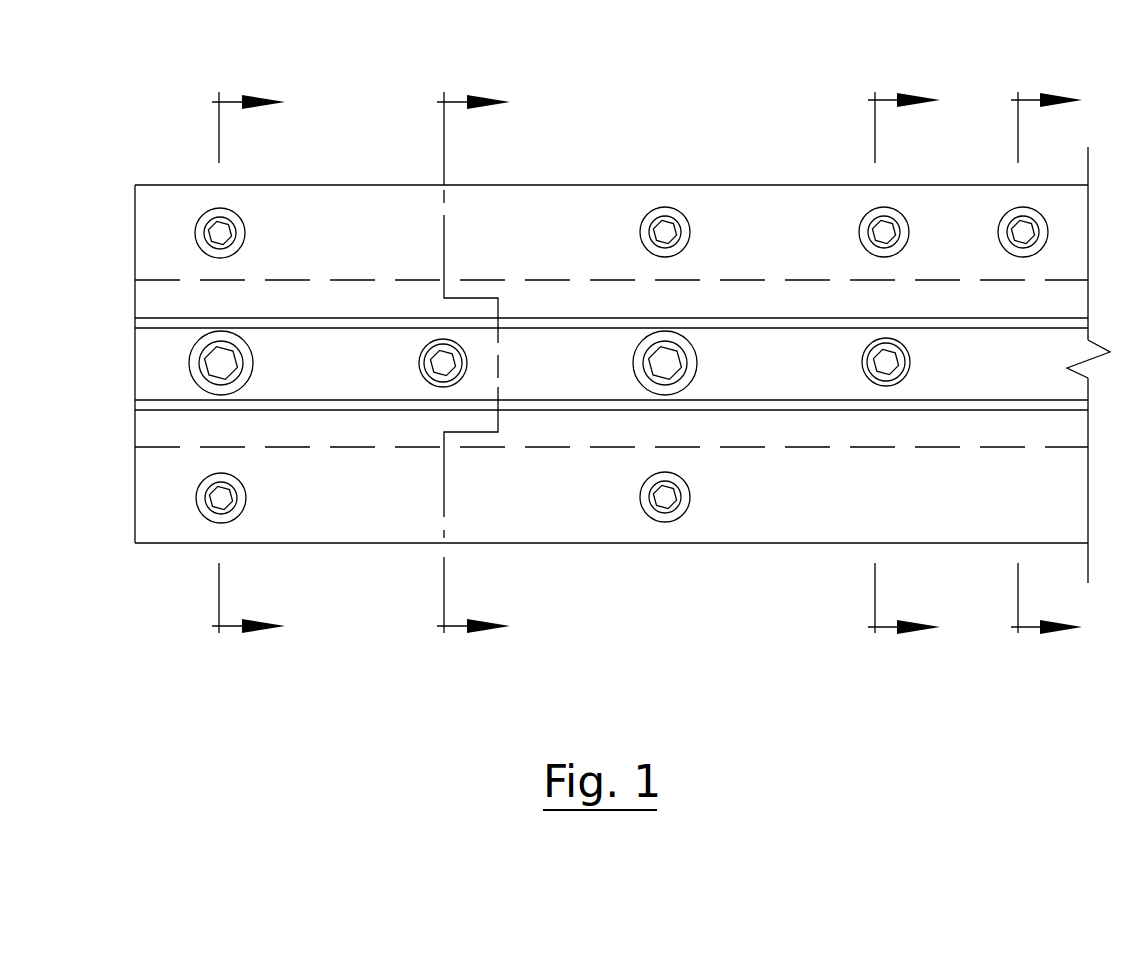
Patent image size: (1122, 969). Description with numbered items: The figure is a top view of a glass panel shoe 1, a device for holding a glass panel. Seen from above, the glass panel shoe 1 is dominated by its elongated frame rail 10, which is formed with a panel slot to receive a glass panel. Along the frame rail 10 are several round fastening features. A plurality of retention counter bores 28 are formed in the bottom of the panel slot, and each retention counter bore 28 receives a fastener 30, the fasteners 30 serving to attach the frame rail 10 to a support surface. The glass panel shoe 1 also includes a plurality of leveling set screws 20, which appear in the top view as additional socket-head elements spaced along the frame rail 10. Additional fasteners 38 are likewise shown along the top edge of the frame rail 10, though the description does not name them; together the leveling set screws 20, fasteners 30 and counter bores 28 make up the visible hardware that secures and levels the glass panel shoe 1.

The glass panel shoe 1 is at (722, 62).
The frame rail 10 is at (568, 185).
The leveling set screws 20 is at (212, 208).
The retention counter bores 28 is at (197, 370).
The fasteners 30 is at (218, 372).
The fastener 38 is at (872, 208).